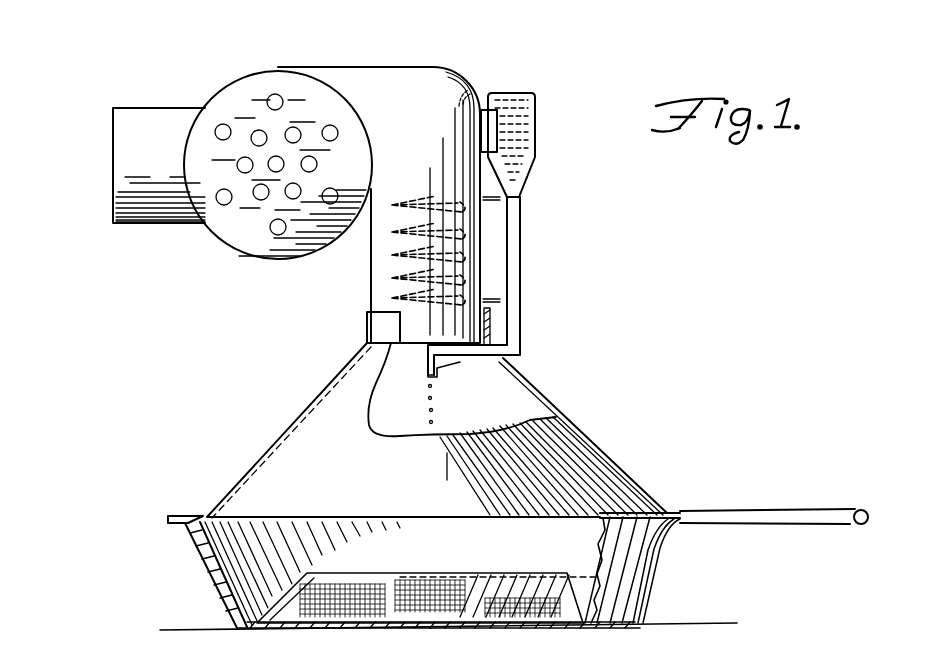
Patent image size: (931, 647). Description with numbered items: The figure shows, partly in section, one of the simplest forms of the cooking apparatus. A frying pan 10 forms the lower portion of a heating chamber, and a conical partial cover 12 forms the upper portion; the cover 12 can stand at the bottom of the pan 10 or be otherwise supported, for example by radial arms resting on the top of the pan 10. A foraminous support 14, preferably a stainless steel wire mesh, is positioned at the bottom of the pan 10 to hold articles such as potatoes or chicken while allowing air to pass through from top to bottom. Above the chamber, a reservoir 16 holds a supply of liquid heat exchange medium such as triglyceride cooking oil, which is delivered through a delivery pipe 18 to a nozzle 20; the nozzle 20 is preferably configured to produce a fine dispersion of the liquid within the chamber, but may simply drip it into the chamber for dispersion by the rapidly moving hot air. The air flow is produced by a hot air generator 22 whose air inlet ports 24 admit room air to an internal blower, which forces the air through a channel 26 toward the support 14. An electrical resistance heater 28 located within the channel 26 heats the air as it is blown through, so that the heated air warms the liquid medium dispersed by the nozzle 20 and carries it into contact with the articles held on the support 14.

The frying pan 10 is at (658, 582).
The conical partial cover 12 is at (585, 458).
The foraminous support 14 is at (437, 567).
The reservoir 16 is at (528, 145).
The delivery pipe 18 is at (520, 263).
The nozzle 20 is at (440, 372).
The hot air generator 22 is at (431, 52).
The air inlet ports 24 is at (277, 230).
The channel 26 is at (372, 266).
The electrical resistance heater 28 is at (380, 283).